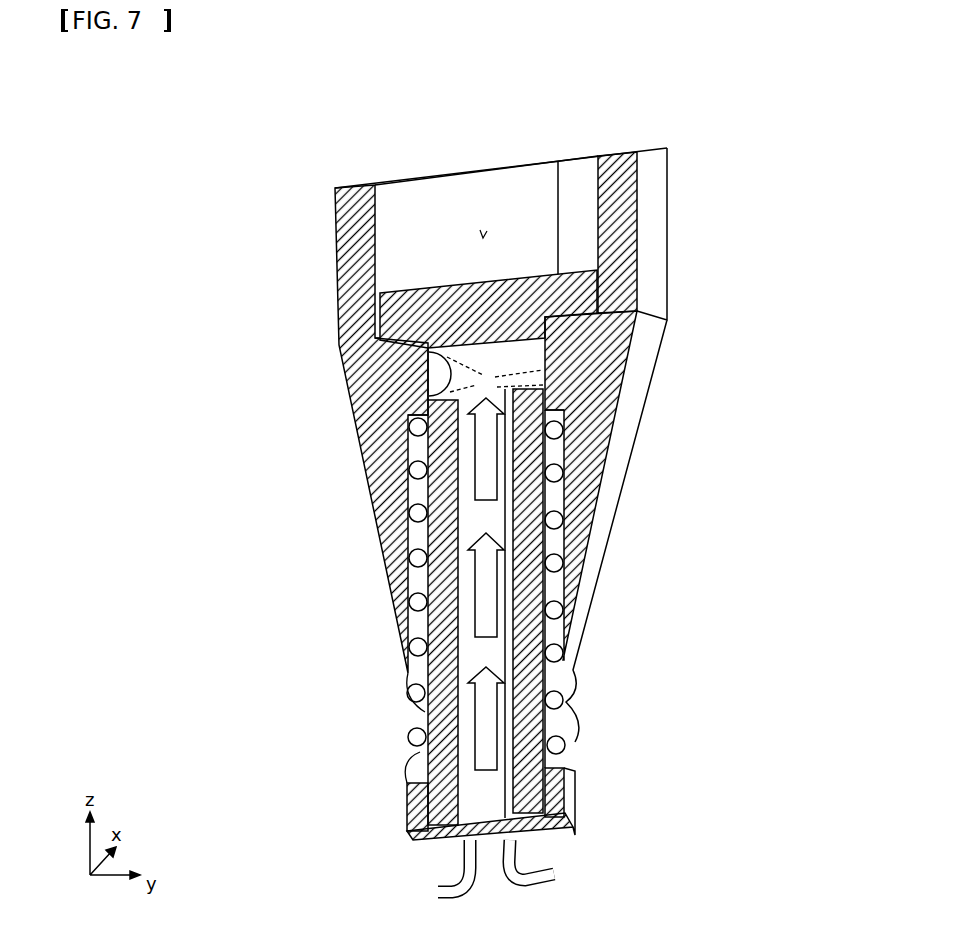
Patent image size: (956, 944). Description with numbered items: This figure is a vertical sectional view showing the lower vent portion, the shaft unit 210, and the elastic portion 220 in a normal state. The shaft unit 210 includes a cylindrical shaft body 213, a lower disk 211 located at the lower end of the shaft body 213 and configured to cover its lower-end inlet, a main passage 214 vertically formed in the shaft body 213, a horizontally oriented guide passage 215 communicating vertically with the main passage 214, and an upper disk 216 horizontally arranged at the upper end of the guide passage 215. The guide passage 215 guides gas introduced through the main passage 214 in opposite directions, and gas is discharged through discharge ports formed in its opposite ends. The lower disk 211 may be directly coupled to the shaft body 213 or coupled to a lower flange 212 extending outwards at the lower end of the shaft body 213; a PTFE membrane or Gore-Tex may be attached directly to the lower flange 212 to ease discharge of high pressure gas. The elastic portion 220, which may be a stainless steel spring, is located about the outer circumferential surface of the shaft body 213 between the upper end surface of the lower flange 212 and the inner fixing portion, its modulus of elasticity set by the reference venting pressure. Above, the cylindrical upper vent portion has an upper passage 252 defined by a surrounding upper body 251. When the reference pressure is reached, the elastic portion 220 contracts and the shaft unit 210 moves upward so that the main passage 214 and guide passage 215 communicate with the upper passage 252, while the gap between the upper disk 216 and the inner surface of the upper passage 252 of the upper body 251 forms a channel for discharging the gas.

The shaft unit 210 is at (212, 245).
The lower disk 211 is at (407, 832).
The lower flange 212 is at (405, 795).
The shaft body 213 is at (405, 688).
The main passage 214 is at (470, 633).
The guide passage 215 is at (487, 377).
The upper disk 216 is at (465, 286).
The elastic portion 220 is at (580, 700).
The upper body 251 is at (620, 153).
The upper passage 252 is at (483, 235).